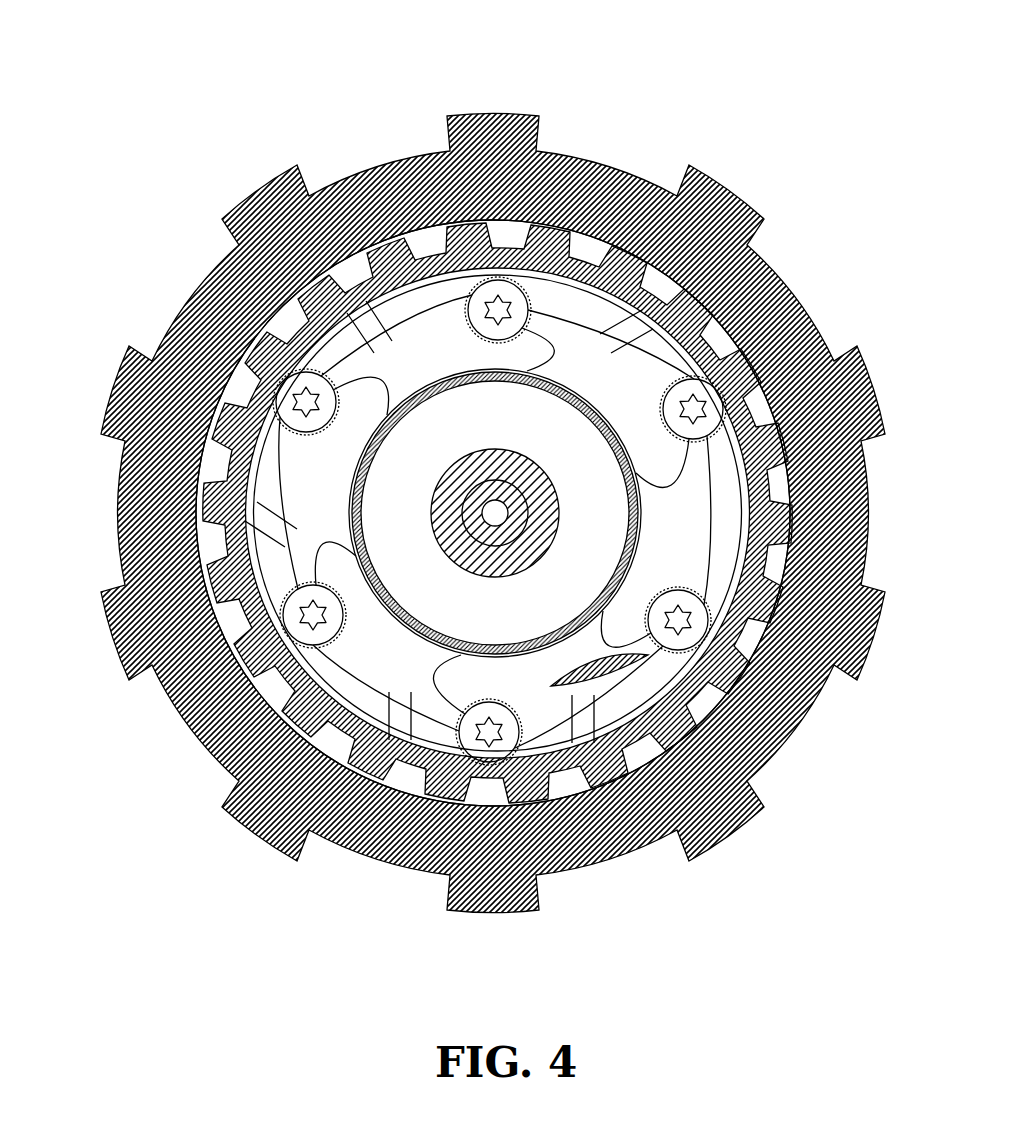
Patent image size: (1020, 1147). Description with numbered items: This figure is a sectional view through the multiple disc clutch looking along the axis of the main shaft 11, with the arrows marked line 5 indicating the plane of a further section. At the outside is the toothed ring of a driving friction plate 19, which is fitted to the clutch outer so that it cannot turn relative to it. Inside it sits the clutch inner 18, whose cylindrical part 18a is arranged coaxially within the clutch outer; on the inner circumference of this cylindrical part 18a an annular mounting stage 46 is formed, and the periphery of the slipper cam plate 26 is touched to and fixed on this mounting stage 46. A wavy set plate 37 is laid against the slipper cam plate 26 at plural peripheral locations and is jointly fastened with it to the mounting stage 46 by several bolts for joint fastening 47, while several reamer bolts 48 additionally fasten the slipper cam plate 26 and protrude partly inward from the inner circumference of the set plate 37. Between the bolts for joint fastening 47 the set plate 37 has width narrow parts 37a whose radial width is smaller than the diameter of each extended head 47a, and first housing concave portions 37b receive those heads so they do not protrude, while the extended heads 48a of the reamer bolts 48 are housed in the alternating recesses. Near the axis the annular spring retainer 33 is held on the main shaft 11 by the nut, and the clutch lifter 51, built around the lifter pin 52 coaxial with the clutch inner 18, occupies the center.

The section line V-V 5 is at (497, 20).
The main shaft 11 is at (489, 553).
The clutch inner 18 is at (493, 480).
The cylindrical part 18a is at (738, 292).
The driving friction plates 19 is at (372, 838).
The slipper cam plate 26 is at (340, 485).
The spring retainer 33 is at (350, 557).
The set plate 37 is at (480, 489).
The width narrow part 37a is at (462, 262).
The first housing concave portions 37b is at (356, 436).
The mounting stage 46 is at (712, 722).
The bolts for joint fastening 47 is at (273, 423).
The extended head 47a is at (357, 382).
The reamer bolts 48 is at (523, 330).
The extended head 48a is at (490, 335).
The clutch lifter 51 is at (518, 537).
The lifter pin 52 is at (482, 476).